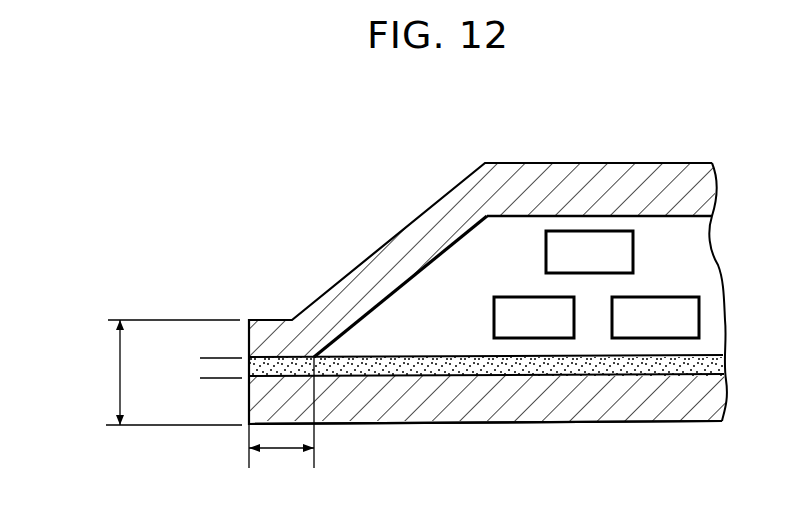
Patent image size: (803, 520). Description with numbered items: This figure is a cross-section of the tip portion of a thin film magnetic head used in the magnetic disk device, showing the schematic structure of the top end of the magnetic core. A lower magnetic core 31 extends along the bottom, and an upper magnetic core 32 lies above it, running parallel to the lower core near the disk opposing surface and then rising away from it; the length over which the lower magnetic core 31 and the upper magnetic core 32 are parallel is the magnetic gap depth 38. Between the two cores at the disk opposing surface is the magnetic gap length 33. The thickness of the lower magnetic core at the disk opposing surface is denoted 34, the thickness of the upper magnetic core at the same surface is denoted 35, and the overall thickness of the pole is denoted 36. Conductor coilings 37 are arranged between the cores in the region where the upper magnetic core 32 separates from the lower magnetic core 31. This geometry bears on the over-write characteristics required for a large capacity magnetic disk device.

The lower magnetic core 31 is at (481, 397).
The upper magnetic core 32 is at (535, 163).
The magnetic gap length 33 is at (218, 320).
The thickness of the lower magnetic core 34 is at (218, 378).
The thickness of the upper magnetic core 35 is at (218, 320).
The thickness of the pole 36 is at (112, 372).
The conductor coilings 37 is at (660, 327).
The magnetic gap depth 38 is at (280, 448).